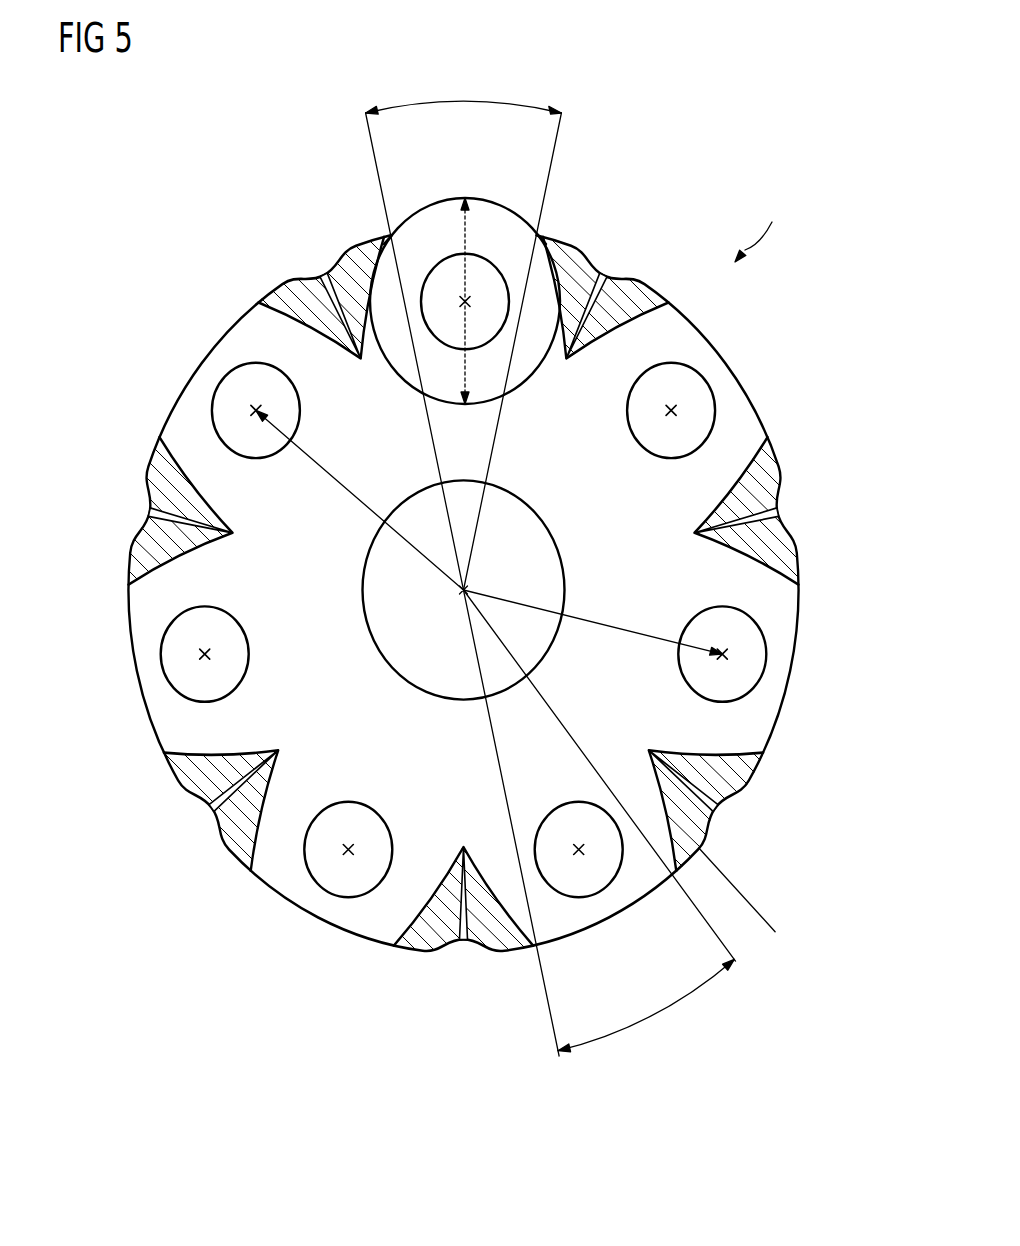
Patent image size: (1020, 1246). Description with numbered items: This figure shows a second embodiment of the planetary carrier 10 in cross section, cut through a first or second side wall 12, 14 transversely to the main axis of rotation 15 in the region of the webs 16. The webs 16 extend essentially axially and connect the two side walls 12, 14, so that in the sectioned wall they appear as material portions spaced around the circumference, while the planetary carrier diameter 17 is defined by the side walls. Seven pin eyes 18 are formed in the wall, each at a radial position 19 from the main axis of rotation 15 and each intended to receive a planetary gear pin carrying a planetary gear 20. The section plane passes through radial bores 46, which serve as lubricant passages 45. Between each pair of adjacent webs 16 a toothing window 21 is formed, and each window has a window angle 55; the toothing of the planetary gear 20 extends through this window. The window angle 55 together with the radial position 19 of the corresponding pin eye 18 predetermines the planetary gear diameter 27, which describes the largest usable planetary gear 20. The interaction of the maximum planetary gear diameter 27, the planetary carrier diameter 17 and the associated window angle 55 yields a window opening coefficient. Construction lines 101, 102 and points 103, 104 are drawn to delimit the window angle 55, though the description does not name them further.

The planetary carrier 10 is at (760, 227).
The first side wall 12 is at (427, 593).
The second side wall 14 is at (165, 712).
The main axis of rotation 15 is at (464, 590).
The web 16 is at (412, 950).
The planetary carrier diameter 17 is at (757, 900).
The pin eye 18 is at (585, 880).
The radial position 19 is at (608, 626).
The planetary gear 20 is at (457, 198).
The toothing window 21 is at (647, 1020).
The planetary gear diameter 27 is at (482, 374).
The lubricant passage 45 is at (462, 601).
The radial bore 46 is at (455, 946).
The window angle 55 is at (465, 100).
The first line 101 is at (398, 255).
The second line 102 is at (522, 255).
The first intersection point 103 is at (397, 237).
The second intersection point 104 is at (533, 235).